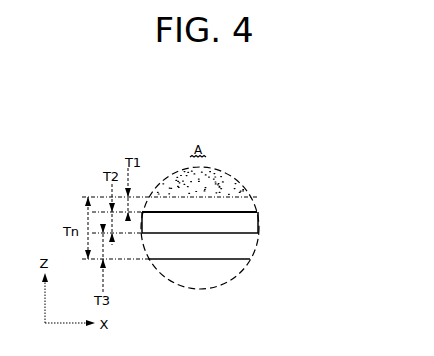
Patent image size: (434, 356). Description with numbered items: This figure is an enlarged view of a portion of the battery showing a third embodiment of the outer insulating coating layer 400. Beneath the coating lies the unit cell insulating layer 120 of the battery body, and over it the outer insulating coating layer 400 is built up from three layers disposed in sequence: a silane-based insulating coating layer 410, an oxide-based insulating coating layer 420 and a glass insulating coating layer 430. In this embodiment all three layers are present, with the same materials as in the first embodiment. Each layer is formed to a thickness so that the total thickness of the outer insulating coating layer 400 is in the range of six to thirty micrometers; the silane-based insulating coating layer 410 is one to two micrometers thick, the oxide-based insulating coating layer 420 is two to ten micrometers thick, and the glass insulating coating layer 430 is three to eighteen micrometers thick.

The unit cell insulating layer 120 is at (208, 184).
The outer insulating coating layer 400 is at (225, 226).
The silane-based insulating coating layer 410 is at (225, 205).
The oxide-based insulating coating layer 420 is at (220, 228).
The glass insulating coating layer 430 is at (218, 251).